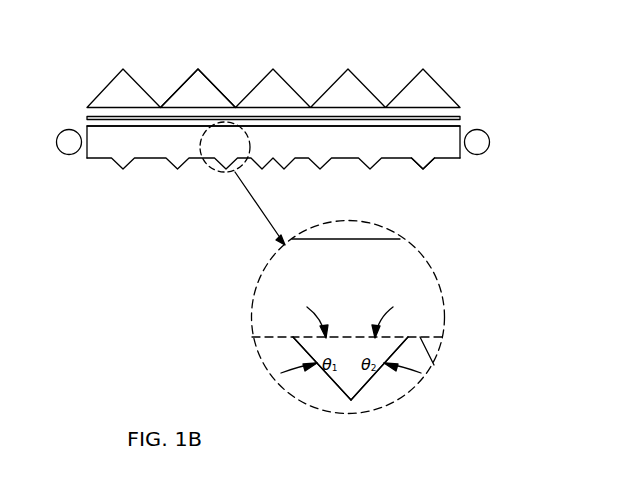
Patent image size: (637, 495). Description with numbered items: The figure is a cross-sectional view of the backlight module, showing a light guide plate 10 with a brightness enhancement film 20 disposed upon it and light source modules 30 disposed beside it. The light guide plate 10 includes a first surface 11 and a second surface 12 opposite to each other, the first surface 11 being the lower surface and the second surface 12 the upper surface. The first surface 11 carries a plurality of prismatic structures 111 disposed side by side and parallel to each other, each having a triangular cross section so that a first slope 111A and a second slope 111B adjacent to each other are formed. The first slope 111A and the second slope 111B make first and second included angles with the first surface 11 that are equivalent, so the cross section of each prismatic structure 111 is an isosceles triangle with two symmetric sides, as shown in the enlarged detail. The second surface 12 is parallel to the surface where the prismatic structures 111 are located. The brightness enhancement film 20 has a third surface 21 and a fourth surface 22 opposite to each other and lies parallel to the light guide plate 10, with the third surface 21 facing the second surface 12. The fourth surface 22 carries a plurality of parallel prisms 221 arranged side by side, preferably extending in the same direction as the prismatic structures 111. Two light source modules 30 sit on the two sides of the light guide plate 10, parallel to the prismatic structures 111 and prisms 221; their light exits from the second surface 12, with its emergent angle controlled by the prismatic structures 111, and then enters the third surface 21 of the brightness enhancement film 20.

The light guide plate 10 is at (281, 182).
The first surface 11 is at (392, 160).
The prismatic structures 111 is at (400, 304).
The first slope 111A is at (329, 378).
The second slope 111B is at (379, 376).
The second surface 12 is at (448, 124).
The brightness enhancement film 20 is at (279, 77).
The third surface 21 is at (108, 117).
The fourth surface 22 is at (273, 71).
The prisms 221 is at (190, 93).
The light source modules 30 is at (55, 141).